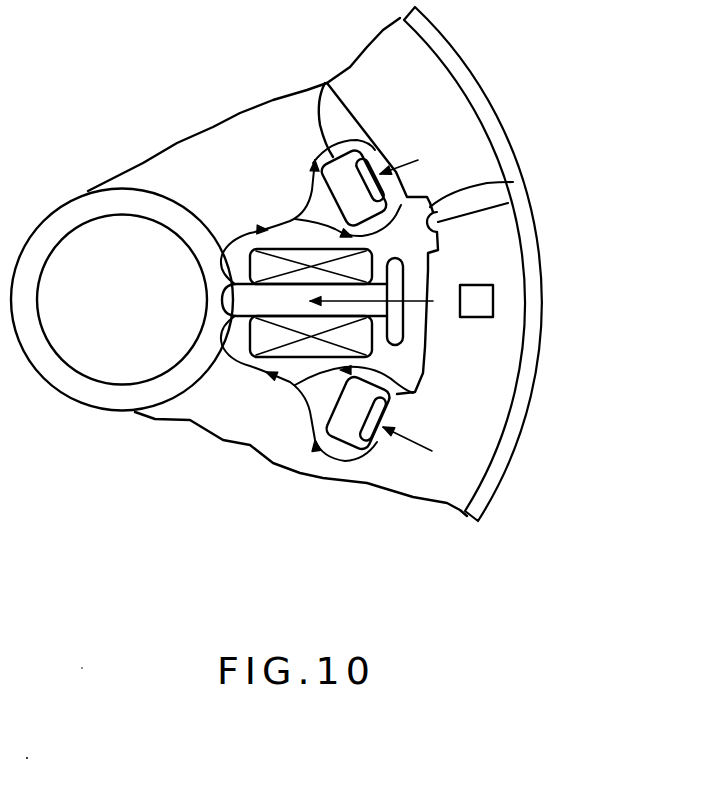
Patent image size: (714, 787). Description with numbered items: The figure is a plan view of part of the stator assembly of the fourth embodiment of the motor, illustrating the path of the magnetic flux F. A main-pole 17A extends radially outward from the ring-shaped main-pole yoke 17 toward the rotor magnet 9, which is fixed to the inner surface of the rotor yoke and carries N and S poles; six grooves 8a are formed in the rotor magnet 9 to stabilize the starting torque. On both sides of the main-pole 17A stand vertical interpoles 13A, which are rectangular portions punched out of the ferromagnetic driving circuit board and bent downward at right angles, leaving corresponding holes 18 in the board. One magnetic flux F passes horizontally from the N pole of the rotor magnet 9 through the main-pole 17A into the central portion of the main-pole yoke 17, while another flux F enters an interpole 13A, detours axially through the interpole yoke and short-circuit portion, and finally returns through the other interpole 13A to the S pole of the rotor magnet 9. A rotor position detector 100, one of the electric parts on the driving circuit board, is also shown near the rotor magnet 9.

The rotor magnet 9 is at (378, 55).
The main-pole yoke 17 is at (153, 395).
The main-pole 17A is at (398, 287).
The hole 18 is at (337, 162).
The interpole 13A is at (368, 157).
The groove 8a is at (507, 182).
The rotor position detector 100 is at (490, 305).
The magnetic flux F is at (250, 232).